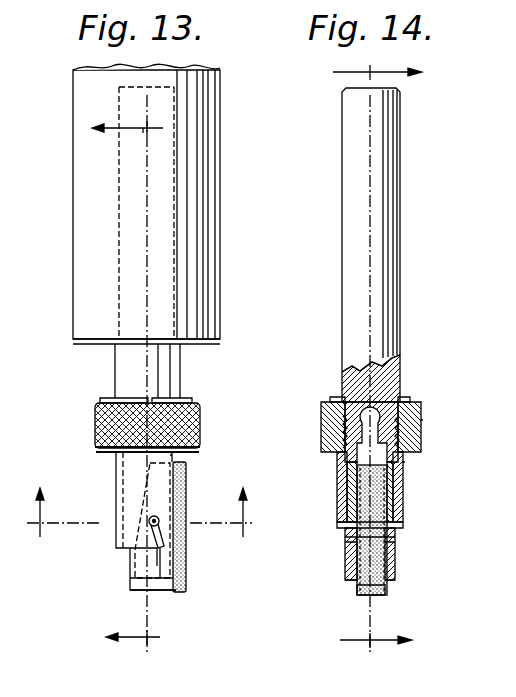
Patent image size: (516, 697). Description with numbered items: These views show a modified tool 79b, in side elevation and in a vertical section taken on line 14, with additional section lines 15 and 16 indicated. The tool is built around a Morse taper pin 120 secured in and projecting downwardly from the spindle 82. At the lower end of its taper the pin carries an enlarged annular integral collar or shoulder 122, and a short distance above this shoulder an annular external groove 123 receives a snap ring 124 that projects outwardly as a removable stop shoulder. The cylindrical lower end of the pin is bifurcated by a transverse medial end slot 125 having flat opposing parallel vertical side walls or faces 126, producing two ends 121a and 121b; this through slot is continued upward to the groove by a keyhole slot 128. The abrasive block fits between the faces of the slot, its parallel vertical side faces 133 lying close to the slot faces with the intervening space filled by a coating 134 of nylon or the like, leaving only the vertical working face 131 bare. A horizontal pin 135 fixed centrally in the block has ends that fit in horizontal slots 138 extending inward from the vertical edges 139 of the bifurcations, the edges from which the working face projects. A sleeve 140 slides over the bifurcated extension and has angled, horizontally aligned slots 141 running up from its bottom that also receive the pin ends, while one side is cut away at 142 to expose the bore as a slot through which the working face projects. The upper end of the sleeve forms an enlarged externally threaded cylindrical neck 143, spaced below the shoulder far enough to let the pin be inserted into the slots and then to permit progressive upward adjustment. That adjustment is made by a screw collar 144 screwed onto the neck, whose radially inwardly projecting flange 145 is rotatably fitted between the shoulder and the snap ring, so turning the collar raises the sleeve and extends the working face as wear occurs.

In FIG. 13, the section line 14— 14 is at (139, 380).
In FIG. 14, the section line 15— 15 is at (361, 365).
In FIG. 13, the section line 16— 16 is at (139, 527).
In FIG. 13, the spindle 82 is at (221, 150).
In FIG. 13, the Morse taper pin 120 is at (121, 363).
In FIG. 14, the Morse taper pin 120 is at (402, 212).
In FIG. 13, the snap ring 124 is at (104, 399).
In FIG. 14, the snap ring 124 is at (338, 396).
In FIG. 13, the screw collar 144 is at (95, 421).
In FIG. 14, the screw collar 144 is at (322, 414).
In FIG. 13, the sleeve 140 is at (125, 471).
In FIG. 14, the sleeve 140 is at (337, 468).
In FIG. 13, the cut away side 142 is at (173, 453).
In FIG. 13, the modified tool 79b is at (186, 506).
In FIG. 13, the horizontal pin 135 is at (150, 522).
In FIG. 14, the horizontal pin 135 is at (336, 504).
In FIG. 13, the slots 141 is at (143, 540).
In FIG. 14, the slots 141 is at (340, 532).
In FIG. 13, the working face 131 is at (187, 556).
In FIG. 13, the end 121a is at (150, 572).
In FIG. 14, the end 121a is at (338, 545).
In FIG. 13, the vertical edges 139 is at (170, 566).
In FIG. 13, the coating 134 is at (146, 590).
In FIG. 14, the coating 134 is at (362, 597).
In FIG. 14, the keyhole slot 128 is at (400, 362).
In FIG. 14, the annular external groove 123 is at (400, 402).
In FIG. 14, the flange 145 is at (415, 412).
In FIG. 14, the collar or shoulder 122 is at (423, 420).
In FIG. 14, the externally threaded cylindrical neck 143 is at (336, 441).
In FIG. 14, the transverse medial end slot 125 is at (404, 464).
In FIG. 14, the side walls or faces 126 is at (386, 500).
In FIG. 14, the side faces 133 is at (350, 509).
In FIG. 14, the horizontal slots 138 is at (396, 537).
In FIG. 14, the end 121b is at (398, 556).